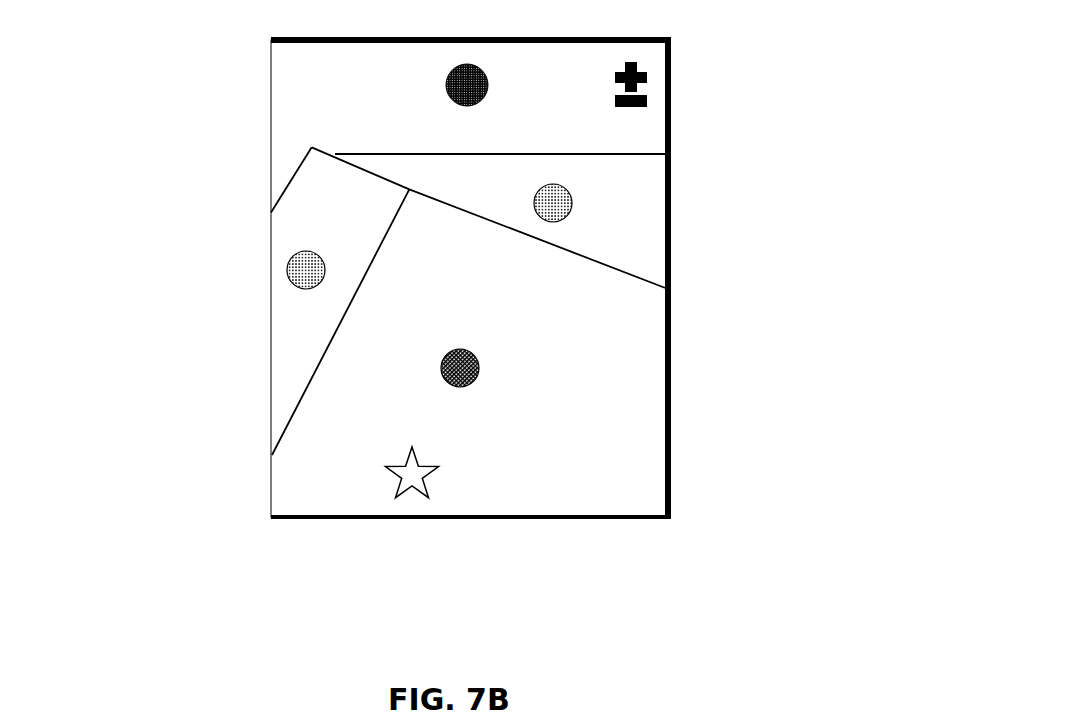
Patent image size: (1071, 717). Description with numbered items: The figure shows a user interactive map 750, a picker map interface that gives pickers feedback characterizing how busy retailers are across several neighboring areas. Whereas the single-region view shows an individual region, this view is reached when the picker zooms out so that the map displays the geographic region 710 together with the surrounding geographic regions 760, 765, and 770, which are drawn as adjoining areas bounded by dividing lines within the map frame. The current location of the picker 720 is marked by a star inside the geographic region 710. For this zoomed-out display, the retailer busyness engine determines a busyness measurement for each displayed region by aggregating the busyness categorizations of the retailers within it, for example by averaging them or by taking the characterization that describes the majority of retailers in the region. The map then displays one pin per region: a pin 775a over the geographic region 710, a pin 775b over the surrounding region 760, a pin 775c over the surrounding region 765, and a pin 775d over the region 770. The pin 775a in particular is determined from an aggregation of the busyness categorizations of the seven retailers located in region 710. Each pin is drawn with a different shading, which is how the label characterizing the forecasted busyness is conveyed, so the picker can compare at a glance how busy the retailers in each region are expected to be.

The user interactive map 750 is at (357, 278).
The geographic region 710 is at (638, 413).
The surrounding geographic region 760 is at (282, 330).
The surrounding geographic region 765 is at (748, 240).
The surrounding geographic region 770 is at (643, 118).
The current location of the picker 720 is at (428, 467).
The pin 775a is at (480, 369).
The pin 775b is at (355, 248).
The pin 775c is at (572, 204).
The pin 775d is at (488, 88).